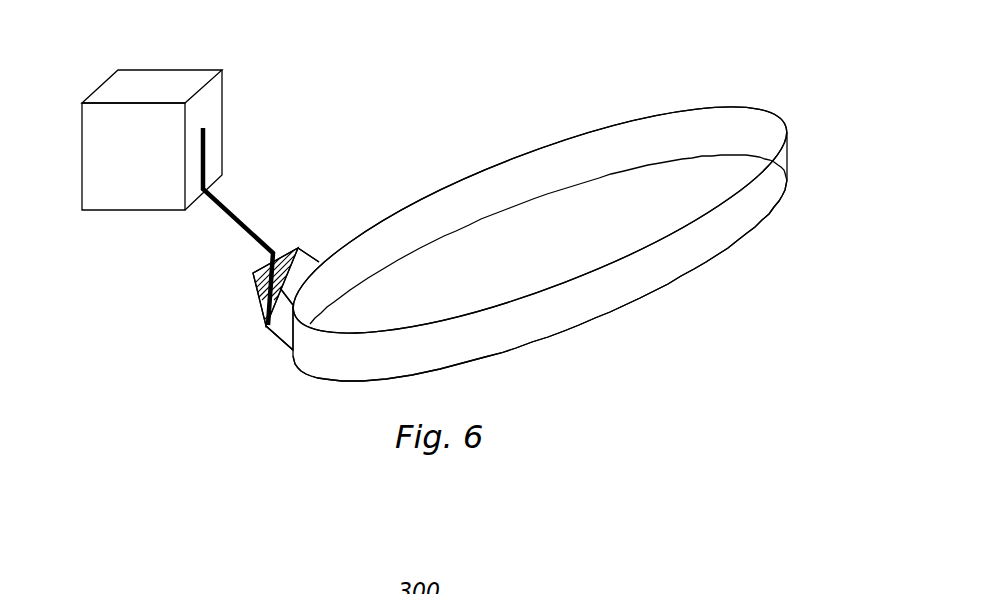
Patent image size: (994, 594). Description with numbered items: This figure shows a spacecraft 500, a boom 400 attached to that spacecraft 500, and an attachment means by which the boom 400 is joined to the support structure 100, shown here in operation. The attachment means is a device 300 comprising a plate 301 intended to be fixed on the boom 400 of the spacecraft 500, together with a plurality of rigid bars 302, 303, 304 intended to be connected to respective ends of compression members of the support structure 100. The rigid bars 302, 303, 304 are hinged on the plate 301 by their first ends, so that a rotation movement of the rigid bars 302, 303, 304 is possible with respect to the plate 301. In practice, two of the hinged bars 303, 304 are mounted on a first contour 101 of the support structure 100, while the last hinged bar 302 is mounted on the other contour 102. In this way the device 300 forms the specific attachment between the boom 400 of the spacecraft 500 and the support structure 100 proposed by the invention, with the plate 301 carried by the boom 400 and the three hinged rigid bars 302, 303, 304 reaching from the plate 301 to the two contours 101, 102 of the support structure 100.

The support structure 100 is at (535, 147).
The first contour 101 is at (380, 220).
The other contour 102 is at (557, 338).
The device 300 is at (239, 296).
The plate 301 is at (253, 269).
The rigid bar 302 is at (277, 340).
The rigid bar 303 is at (282, 314).
The rigid bar 304 is at (312, 245).
The boom 400 is at (240, 212).
The spacecraft 500 is at (194, 62).